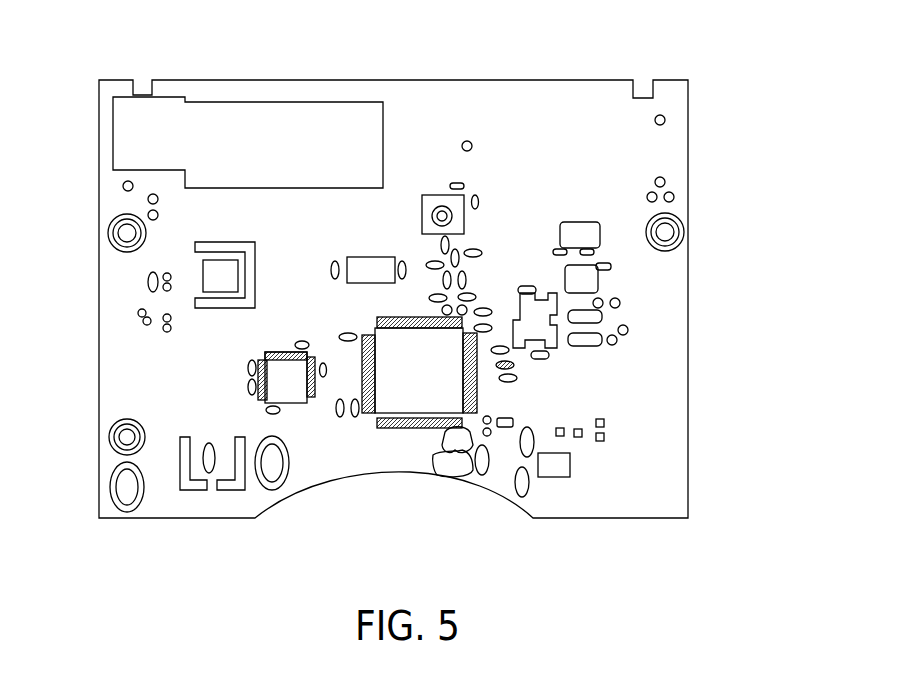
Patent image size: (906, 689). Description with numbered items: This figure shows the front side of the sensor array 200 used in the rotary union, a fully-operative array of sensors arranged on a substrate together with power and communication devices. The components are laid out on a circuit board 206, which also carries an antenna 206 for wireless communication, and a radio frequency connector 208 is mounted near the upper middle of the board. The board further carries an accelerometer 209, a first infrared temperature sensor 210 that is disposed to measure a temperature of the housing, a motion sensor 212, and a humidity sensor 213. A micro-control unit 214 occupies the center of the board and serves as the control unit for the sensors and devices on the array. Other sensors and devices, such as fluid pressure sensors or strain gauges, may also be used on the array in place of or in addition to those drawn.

The sensor array 200 is at (736, 237).
The antenna 206 is at (352, 118).
The radio frequency connector 208 is at (467, 217).
The accelerometer 209 is at (585, 279).
The first infrared temperature sensor 210 is at (217, 273).
The motion sensor 212 is at (280, 373).
The humidity sensor 213 is at (203, 448).
The micro-control unit 214 is at (405, 395).